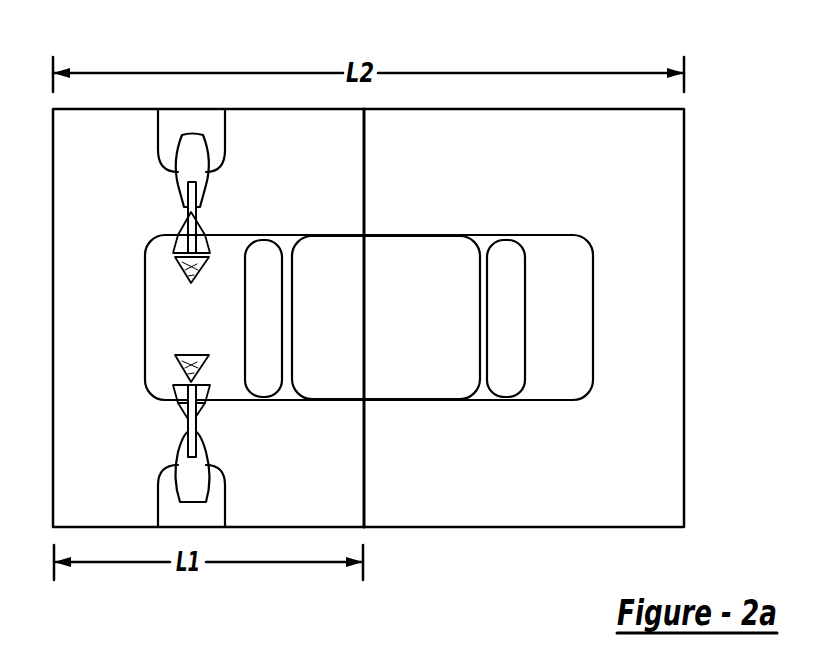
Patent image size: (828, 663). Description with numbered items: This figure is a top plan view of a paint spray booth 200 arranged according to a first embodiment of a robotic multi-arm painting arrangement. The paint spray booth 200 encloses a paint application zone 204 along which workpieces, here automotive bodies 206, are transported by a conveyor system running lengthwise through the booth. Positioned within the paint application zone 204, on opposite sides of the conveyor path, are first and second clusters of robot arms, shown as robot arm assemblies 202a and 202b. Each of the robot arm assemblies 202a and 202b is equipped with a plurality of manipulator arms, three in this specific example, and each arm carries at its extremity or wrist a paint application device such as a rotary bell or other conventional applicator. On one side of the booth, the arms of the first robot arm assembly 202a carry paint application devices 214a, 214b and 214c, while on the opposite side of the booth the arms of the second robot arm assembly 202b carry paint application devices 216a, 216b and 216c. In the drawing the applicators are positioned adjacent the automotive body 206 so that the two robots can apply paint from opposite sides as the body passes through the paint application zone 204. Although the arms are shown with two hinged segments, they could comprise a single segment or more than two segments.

The paint spray booth 200 is at (110, 109).
The first robot arm assembly 202a is at (242, 145).
The second robot arm assembly 202b is at (148, 498).
The paint application zone 204 is at (349, 477).
The automotive body 206 is at (430, 236).
The paint application device 214a is at (197, 281).
The paint application device 214b is at (206, 247).
The paint application device 214c is at (205, 233).
The paint application device 216a is at (198, 357).
The paint application device 216b is at (205, 392).
The paint application device 216c is at (205, 413).